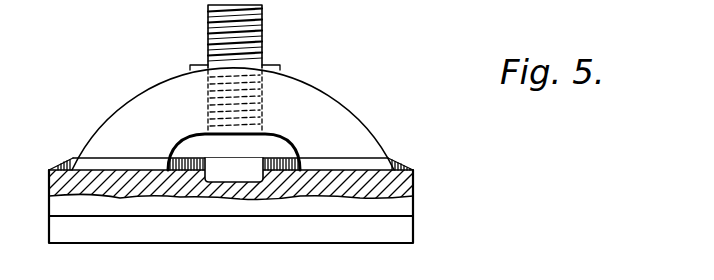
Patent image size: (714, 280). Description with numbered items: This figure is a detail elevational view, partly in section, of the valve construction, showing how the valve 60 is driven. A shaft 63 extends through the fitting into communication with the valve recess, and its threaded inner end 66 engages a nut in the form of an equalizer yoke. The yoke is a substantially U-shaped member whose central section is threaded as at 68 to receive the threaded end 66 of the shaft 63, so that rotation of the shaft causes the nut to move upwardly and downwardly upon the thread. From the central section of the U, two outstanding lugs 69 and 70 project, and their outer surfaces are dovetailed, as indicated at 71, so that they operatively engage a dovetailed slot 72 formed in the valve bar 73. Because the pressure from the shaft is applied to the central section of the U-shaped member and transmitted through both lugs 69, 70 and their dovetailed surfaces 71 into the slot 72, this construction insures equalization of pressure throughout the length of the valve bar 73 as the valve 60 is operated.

The valve 60 is at (120, 245).
The shaft 63 is at (263, 40).
The threaded inner end 66 is at (208, 24).
The threaded central section 68 is at (263, 97).
The outstanding lug 69 is at (376, 152).
The outstanding lug 70 is at (96, 145).
The dovetailed outer surface 71 is at (146, 163).
The dovetailed slot 72 is at (190, 166).
The valve bar 73 is at (56, 185).